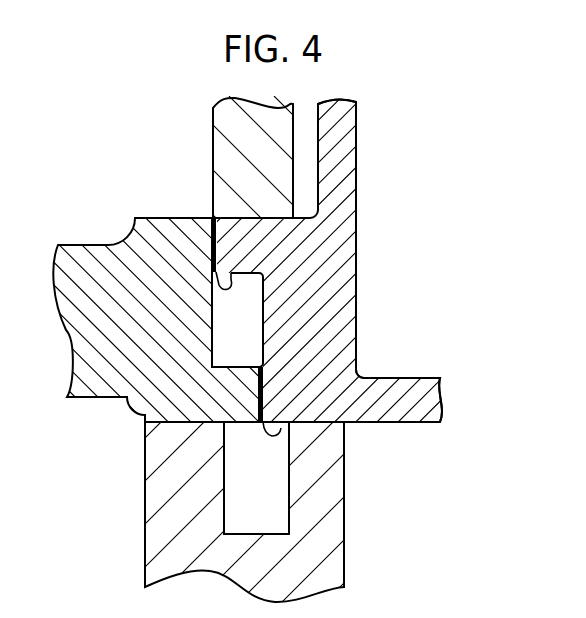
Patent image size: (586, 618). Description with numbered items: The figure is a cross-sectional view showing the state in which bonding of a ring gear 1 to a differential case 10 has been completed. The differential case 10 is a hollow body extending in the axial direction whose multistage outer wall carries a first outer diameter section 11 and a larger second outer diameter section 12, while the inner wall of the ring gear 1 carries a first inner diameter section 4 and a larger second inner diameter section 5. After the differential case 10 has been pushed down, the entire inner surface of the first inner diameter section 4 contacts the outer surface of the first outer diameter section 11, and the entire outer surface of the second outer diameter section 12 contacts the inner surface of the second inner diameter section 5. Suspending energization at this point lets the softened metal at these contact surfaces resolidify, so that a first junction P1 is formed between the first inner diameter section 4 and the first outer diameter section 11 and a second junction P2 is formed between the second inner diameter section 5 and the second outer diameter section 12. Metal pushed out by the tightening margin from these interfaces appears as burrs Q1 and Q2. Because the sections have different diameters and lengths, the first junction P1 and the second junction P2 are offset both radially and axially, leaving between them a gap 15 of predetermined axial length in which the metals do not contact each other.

The ring gear 1 is at (83, 222).
The differential case 10 is at (388, 115).
The first outer diameter section 11 is at (268, 298).
The second outer diameter section 12 is at (217, 237).
The gap 15 is at (252, 340).
The first inner diameter section 4 is at (259, 375).
The second inner diameter section 5 is at (212, 332).
The burr Q1 is at (277, 438).
The burr Q2 is at (221, 287).
The first junction P1 is at (263, 390).
The second junction P2 is at (211, 255).